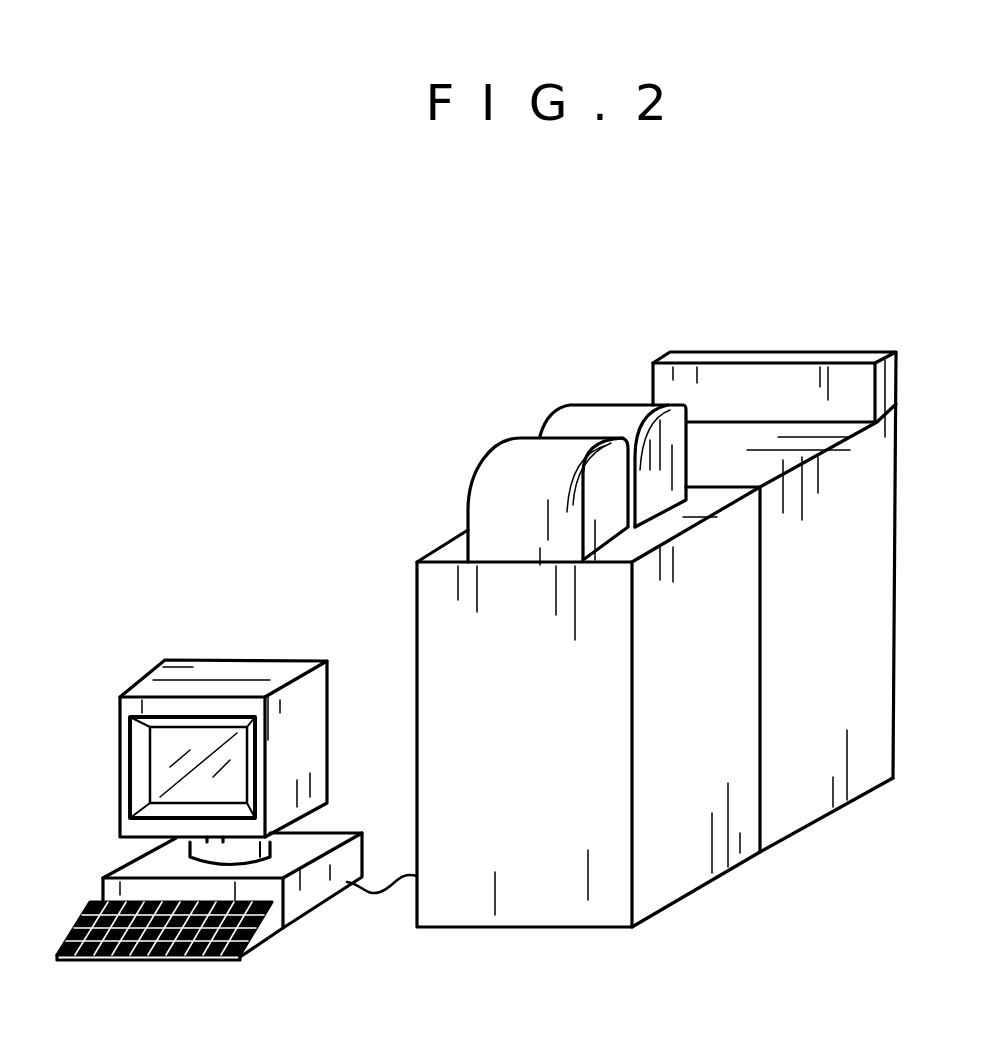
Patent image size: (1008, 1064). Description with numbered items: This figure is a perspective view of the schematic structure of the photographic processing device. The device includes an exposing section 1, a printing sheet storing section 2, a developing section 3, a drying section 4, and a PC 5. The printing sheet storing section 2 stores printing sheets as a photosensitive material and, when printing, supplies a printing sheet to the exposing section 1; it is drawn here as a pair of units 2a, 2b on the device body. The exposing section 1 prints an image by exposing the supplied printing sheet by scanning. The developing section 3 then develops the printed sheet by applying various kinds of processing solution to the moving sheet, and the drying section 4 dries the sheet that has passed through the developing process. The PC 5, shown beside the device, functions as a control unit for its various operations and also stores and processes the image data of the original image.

The exposing section 1 is at (428, 578).
The printing sheet storing section 2 is at (556, 392).
The first unit 2a is at (497, 452).
The second unit 2b is at (547, 424).
The developing section 3 is at (718, 443).
The drying section 4 is at (805, 355).
The PC (Personal Computer) 5 is at (236, 650).